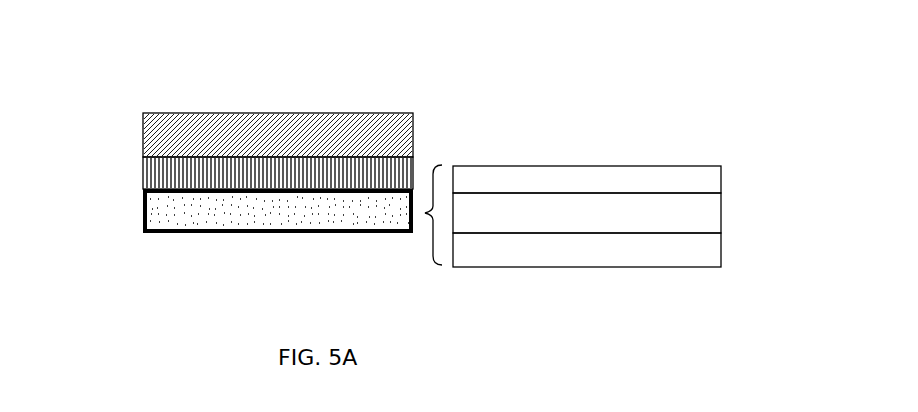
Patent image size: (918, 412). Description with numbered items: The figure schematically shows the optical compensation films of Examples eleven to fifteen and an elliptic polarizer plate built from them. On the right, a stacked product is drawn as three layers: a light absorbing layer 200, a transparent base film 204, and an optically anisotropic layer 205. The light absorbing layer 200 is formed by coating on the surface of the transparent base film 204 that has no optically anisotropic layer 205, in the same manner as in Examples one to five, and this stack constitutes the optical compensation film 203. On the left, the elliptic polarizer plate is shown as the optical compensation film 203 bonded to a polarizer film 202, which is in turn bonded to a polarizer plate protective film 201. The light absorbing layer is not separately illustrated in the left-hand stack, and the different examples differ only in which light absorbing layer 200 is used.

The light absorbing layer 200 is at (710, 181).
The polarizer plate protective film 201 is at (160, 138).
The polarizer film 202 is at (163, 173).
The optical compensation film 203 is at (152, 215).
The transparent base film 204 is at (710, 214).
The optically anisotropic layer 205 is at (720, 257).